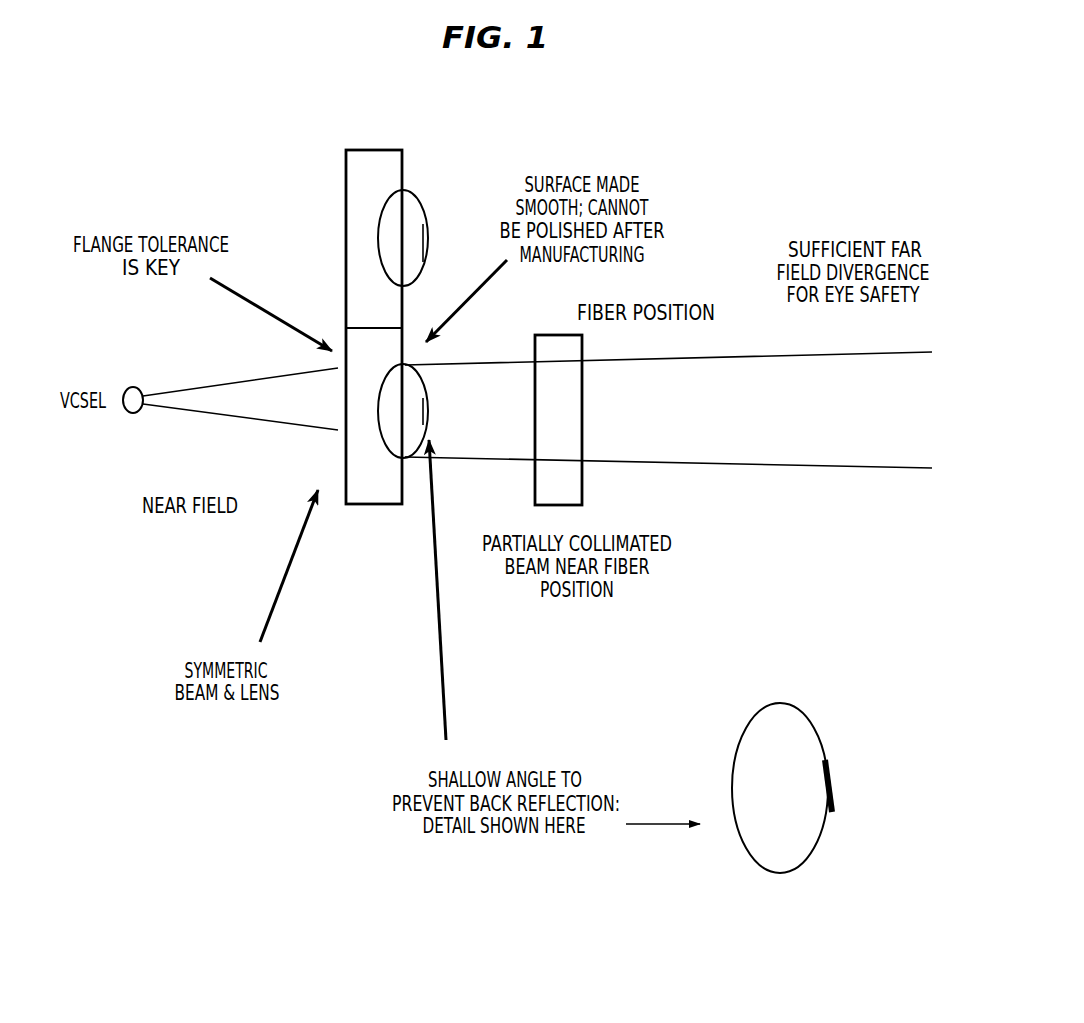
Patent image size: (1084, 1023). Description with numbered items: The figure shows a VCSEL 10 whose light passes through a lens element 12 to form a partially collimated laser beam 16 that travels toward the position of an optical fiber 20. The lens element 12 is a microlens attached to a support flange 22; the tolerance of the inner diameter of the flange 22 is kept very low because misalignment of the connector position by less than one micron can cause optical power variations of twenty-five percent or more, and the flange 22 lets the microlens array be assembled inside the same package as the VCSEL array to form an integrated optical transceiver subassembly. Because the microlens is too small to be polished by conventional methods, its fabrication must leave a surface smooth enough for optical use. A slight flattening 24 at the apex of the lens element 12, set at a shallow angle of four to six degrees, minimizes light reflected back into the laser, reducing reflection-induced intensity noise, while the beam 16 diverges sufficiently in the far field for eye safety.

The VCSEL 10 is at (106, 349).
The lens element 12 is at (418, 193).
The partially collimated laser beam 16 is at (783, 356).
The optical fiber 20 is at (549, 319).
The support flange 22 is at (357, 185).
The flattening 24 is at (427, 246).